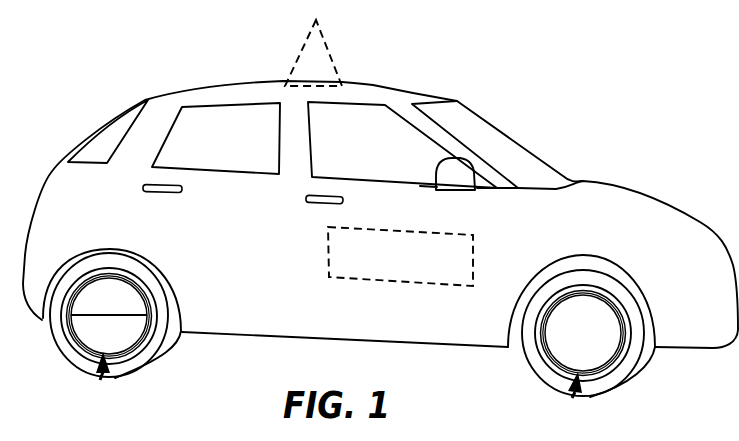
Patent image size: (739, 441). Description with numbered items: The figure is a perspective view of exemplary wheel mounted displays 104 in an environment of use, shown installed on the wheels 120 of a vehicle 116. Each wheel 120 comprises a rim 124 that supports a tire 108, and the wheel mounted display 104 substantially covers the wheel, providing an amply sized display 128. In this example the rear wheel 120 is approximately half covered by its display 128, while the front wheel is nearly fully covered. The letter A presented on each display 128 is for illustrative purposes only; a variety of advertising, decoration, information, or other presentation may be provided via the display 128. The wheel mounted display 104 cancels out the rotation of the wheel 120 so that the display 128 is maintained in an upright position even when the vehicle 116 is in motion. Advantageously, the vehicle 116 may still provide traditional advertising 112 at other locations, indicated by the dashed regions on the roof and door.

The wheel mounted display 104 is at (101, 379).
The tire 108 is at (107, 256).
The traditional advertising 112 is at (281, 72).
The vehicle 116 is at (370, 78).
The wheel 120 is at (124, 310).
The rim 124 is at (137, 287).
The display 128 is at (117, 357).